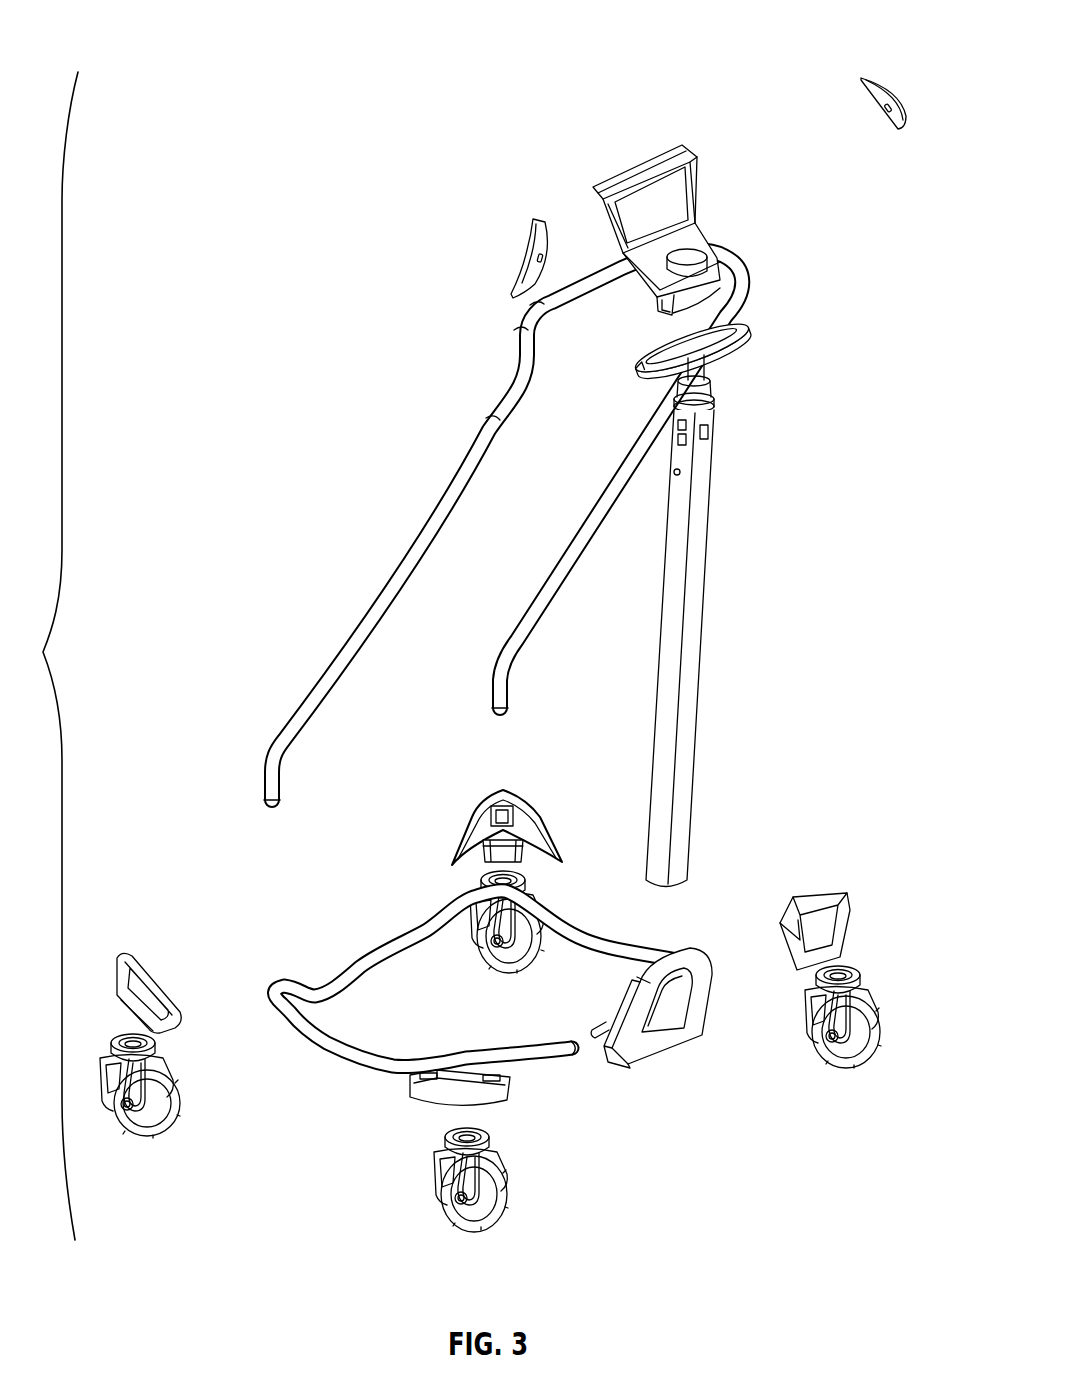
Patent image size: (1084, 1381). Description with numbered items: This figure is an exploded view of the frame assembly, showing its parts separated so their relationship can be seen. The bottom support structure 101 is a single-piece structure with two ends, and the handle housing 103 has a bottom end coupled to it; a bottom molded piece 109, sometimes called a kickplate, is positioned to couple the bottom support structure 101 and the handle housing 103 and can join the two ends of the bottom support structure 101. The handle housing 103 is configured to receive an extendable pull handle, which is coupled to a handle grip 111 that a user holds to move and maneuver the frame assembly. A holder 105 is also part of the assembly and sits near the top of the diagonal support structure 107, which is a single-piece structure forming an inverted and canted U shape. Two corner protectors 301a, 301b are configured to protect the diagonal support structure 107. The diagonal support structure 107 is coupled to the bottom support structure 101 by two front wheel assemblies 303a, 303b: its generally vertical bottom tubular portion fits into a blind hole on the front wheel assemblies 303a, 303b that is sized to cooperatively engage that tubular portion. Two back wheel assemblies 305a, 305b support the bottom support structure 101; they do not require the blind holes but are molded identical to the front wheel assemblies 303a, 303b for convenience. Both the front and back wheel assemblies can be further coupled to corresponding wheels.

The bottom support structure 101 is at (540, 1070).
The handle housing 103 is at (688, 724).
The holder 105 is at (636, 156).
The diagonal support structure 107 is at (428, 492).
The bottom molded piece 109 is at (651, 1068).
The handle grip 111 is at (742, 336).
The corner protector 301a is at (886, 76).
The corner protector 301b is at (521, 241).
The front wheel assembly 303a is at (462, 826).
The front wheel assembly 303b is at (132, 948).
The back wheel assembly 305a is at (855, 911).
The back wheel assembly 305b is at (416, 1086).